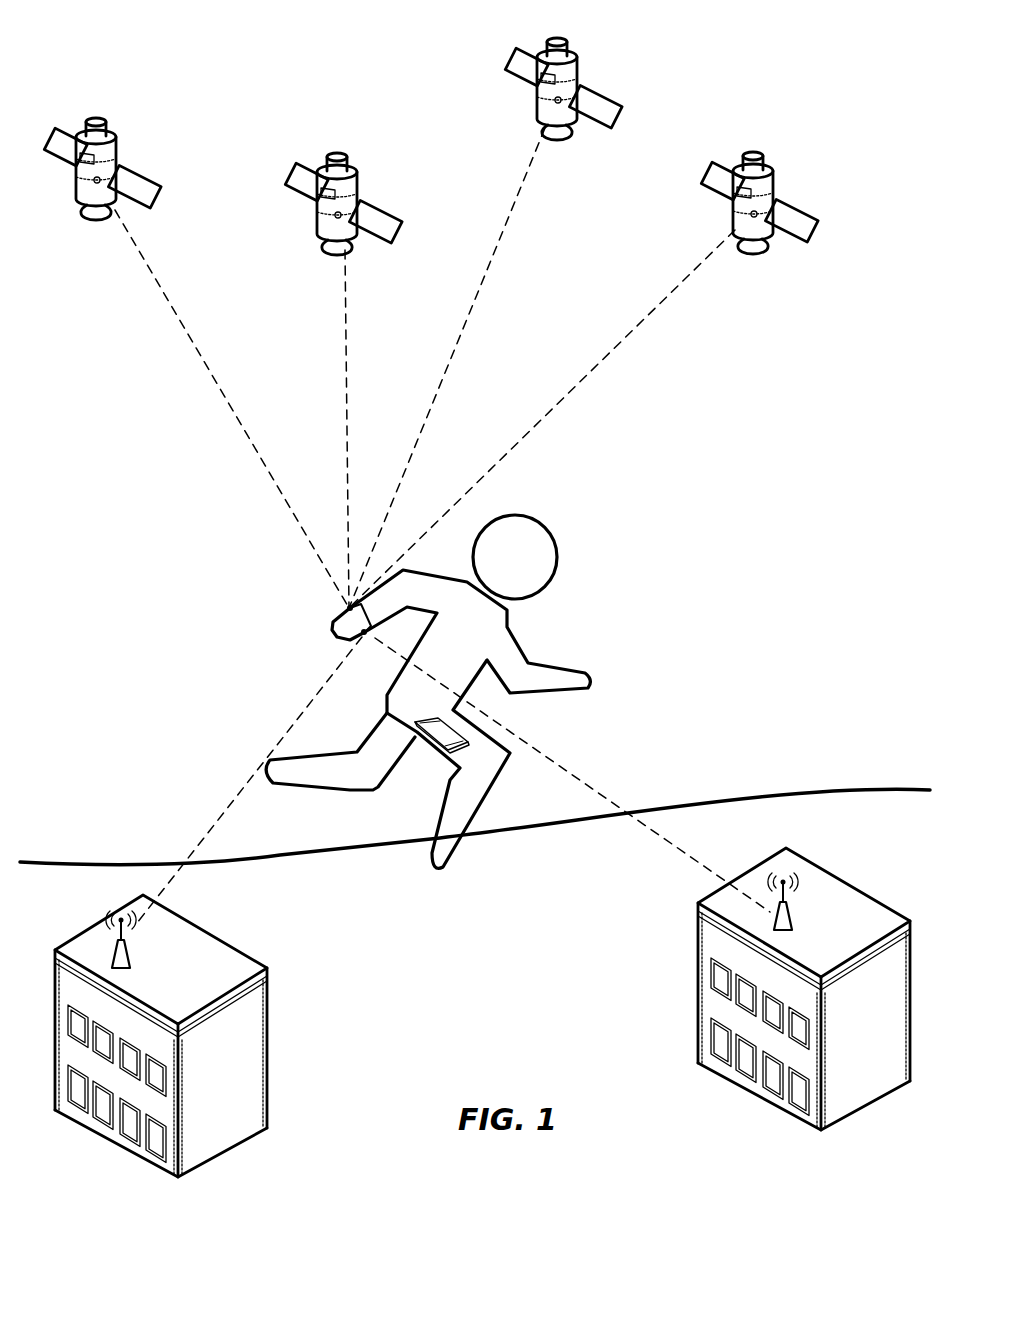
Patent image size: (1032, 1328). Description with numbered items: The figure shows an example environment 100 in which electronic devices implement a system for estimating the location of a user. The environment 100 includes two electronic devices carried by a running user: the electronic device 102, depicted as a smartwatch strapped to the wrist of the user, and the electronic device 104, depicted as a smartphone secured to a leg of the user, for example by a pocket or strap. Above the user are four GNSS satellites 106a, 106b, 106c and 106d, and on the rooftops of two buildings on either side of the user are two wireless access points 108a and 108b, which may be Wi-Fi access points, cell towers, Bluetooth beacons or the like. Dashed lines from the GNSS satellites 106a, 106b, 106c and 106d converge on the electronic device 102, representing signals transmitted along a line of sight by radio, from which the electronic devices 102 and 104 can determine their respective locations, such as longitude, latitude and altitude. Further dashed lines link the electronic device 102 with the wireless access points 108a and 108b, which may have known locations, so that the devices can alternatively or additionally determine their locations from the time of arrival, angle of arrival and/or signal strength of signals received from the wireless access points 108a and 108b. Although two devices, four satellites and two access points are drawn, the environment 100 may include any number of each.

The environment 100 is at (106, 58).
The electronic device 102 is at (347, 607).
The electronic device 104 is at (468, 748).
The GNSS satellite 106a is at (118, 143).
The GNSS satellite 106b is at (360, 180).
The GNSS satellite 106c is at (578, 64).
The GNSS satellite 106d is at (773, 175).
The wireless access point 108a is at (132, 956).
The wireless access point 108b is at (793, 918).